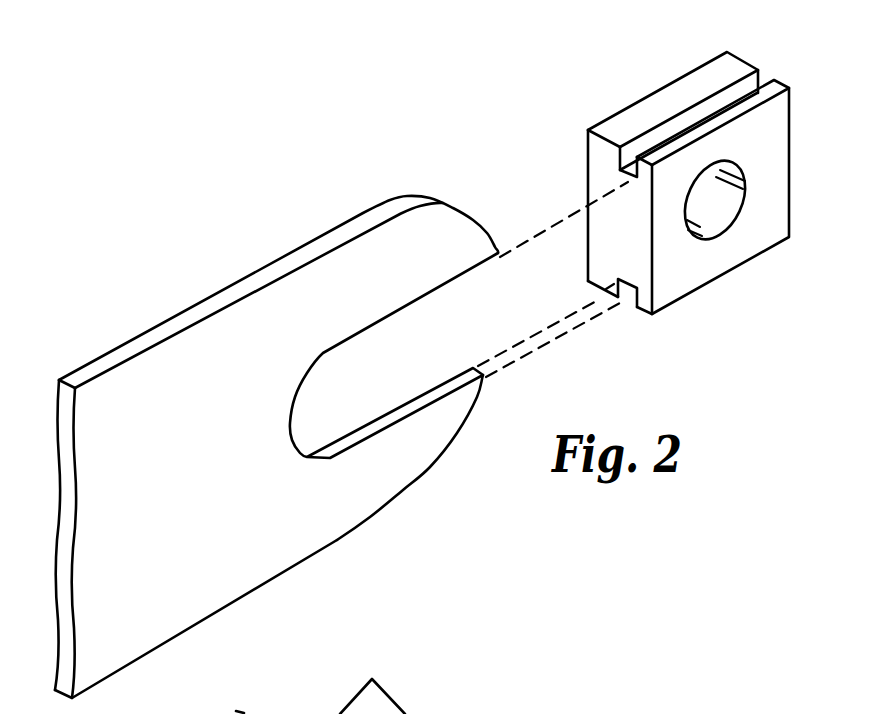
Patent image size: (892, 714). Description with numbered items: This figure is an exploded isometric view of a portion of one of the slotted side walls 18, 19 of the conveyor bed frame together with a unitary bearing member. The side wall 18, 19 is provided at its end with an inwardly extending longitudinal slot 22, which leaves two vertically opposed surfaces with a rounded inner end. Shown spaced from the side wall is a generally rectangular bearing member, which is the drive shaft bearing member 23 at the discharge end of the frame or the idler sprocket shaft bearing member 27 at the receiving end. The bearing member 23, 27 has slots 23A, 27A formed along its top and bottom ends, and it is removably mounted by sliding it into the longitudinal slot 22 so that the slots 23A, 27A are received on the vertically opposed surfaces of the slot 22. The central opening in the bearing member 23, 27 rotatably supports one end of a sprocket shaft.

The left side wall 18 is at (276, 447).
The right side wall 19 is at (276, 447).
The longitudinal slot 22 is at (382, 316).
The drive shaft bearing member 23 is at (710, 205).
The idler sprocket shaft bearing member 27 is at (710, 205).
The slot of drive shaft bearing member 23A is at (678, 205).
The slot of idler sprocket shaft bearing member 27A is at (681, 122).